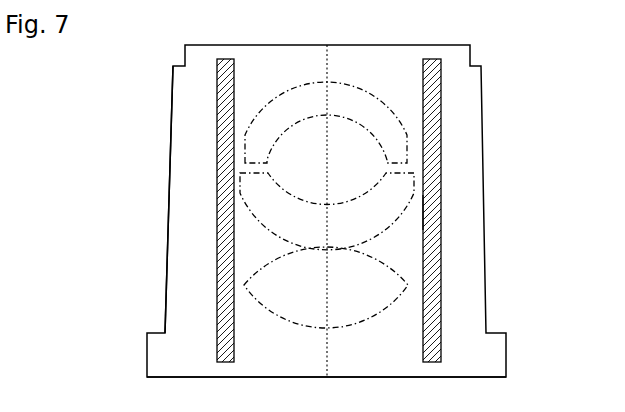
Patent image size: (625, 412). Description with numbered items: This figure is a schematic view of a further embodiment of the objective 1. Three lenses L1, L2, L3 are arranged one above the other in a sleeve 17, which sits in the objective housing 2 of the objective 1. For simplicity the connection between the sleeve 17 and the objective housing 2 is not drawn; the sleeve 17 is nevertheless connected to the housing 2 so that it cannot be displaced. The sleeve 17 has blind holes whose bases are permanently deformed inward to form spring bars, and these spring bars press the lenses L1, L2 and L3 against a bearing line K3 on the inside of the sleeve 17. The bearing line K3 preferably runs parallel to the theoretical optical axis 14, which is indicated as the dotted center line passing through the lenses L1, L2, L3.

The objective 1 is at (154, 168).
The objective housing 2 is at (168, 245).
The theoretical optical axis 14 is at (327, 355).
The sleeve 17 is at (436, 237).
The bearing line K3 is at (437, 213).
The first lens L1 is at (407, 152).
The second lens L2 is at (413, 181).
The third lens L3 is at (408, 286).